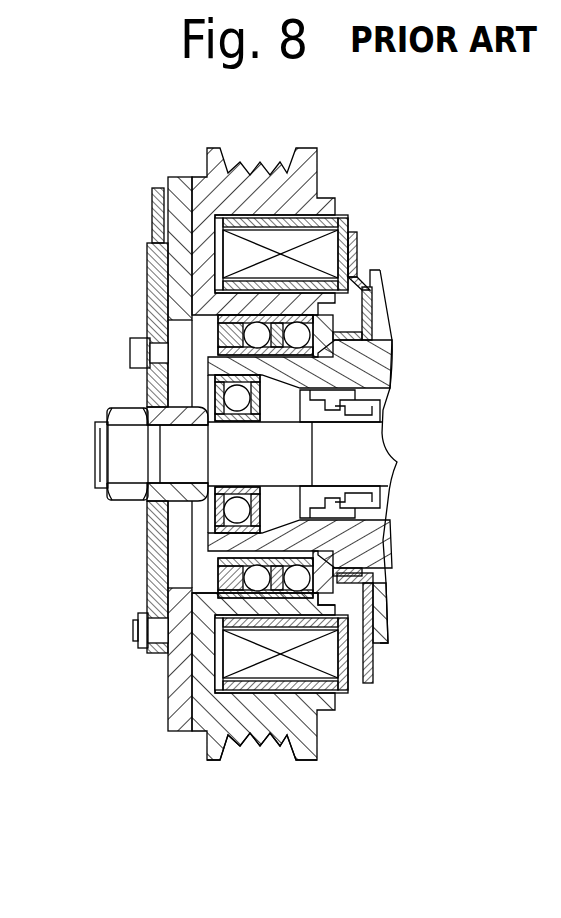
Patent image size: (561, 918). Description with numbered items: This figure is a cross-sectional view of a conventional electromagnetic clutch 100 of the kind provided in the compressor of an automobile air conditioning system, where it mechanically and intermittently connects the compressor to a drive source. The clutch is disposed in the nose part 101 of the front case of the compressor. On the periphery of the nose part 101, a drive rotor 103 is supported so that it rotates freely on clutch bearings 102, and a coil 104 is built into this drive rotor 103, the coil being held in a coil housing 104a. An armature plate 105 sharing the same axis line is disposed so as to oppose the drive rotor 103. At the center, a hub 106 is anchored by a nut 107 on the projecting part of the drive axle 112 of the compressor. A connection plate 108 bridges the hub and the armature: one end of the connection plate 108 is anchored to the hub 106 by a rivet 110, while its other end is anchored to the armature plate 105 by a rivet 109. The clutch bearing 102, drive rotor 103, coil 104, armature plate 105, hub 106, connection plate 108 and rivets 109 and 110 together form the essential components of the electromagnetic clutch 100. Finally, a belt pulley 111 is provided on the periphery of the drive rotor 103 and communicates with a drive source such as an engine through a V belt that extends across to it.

The electromagnetic clutch 100 is at (167, 152).
The nose part 101 is at (287, 490).
The clutch bearing 102 is at (373, 667).
The drive rotor 103 is at (314, 765).
The coil 104 is at (230, 697).
The coil housing 104a is at (335, 715).
The armature plate 105 is at (170, 718).
The hub 106 is at (149, 548).
The nut 107 is at (118, 407).
The connection plate 108 is at (152, 214).
The rivet 109 is at (138, 634).
The rivet 110 is at (133, 353).
The belt pulley 111 is at (290, 743).
The drive axle 112 is at (353, 437).